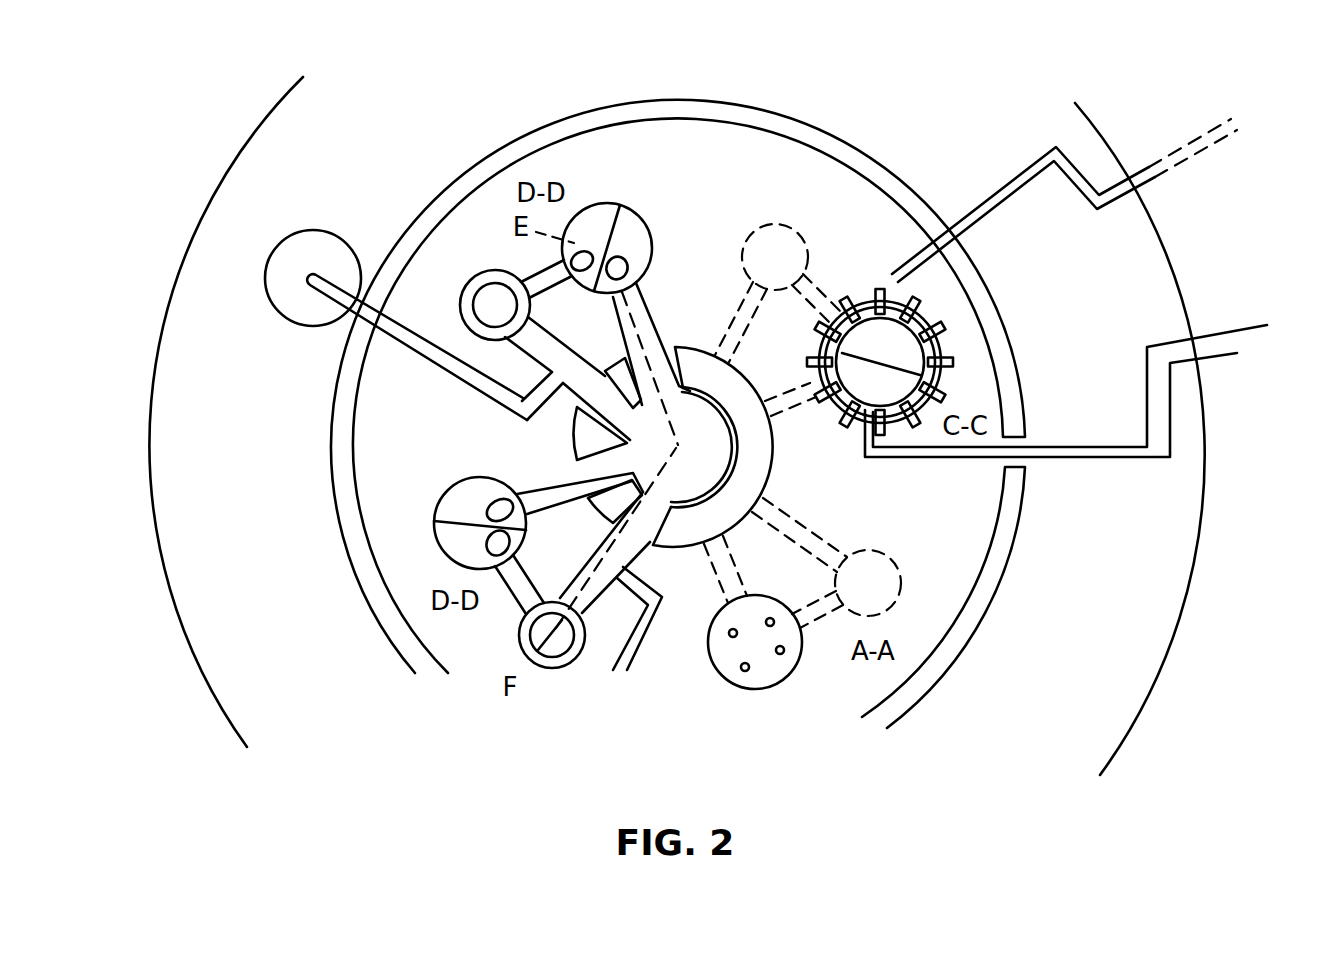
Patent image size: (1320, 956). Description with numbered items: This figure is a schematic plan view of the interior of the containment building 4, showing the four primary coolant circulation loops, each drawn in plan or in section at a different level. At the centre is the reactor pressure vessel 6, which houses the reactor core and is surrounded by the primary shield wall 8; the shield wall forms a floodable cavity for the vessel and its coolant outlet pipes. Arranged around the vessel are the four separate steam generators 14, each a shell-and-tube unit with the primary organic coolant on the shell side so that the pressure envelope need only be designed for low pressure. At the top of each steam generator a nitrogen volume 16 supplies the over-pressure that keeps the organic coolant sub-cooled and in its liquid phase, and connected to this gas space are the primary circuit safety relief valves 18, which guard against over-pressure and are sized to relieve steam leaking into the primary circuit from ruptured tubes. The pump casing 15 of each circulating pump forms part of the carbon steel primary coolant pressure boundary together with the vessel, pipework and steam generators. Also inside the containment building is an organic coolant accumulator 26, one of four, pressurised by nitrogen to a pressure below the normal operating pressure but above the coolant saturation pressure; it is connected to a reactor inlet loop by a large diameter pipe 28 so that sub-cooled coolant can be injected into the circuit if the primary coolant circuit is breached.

The containment building 4 is at (1196, 576).
The pressure vessel 6 is at (704, 447).
The primary shield wall 8 is at (777, 468).
The steam generator 14 is at (641, 216).
The pump casing 15 is at (483, 273).
The nitrogen volume 16 is at (907, 352).
The primary circuit safety relief valve 18 is at (744, 670).
The organic coolant accumulator 26 is at (312, 229).
The large diameter pipe 28 is at (437, 363).